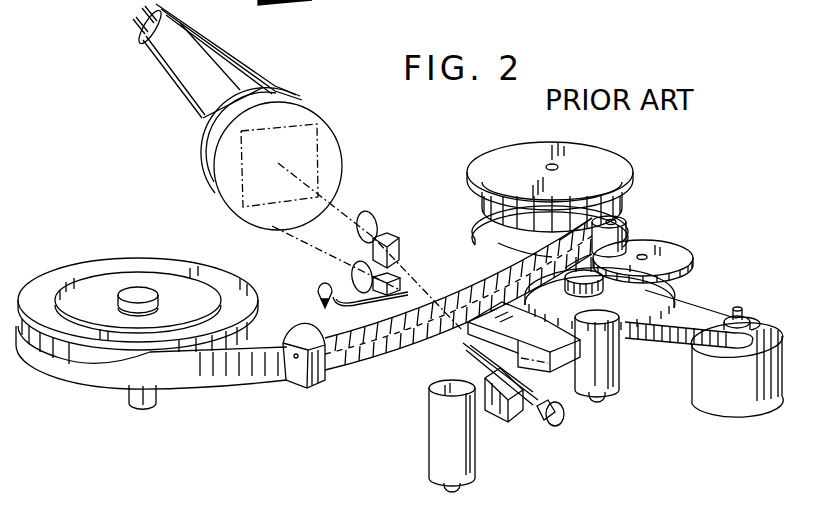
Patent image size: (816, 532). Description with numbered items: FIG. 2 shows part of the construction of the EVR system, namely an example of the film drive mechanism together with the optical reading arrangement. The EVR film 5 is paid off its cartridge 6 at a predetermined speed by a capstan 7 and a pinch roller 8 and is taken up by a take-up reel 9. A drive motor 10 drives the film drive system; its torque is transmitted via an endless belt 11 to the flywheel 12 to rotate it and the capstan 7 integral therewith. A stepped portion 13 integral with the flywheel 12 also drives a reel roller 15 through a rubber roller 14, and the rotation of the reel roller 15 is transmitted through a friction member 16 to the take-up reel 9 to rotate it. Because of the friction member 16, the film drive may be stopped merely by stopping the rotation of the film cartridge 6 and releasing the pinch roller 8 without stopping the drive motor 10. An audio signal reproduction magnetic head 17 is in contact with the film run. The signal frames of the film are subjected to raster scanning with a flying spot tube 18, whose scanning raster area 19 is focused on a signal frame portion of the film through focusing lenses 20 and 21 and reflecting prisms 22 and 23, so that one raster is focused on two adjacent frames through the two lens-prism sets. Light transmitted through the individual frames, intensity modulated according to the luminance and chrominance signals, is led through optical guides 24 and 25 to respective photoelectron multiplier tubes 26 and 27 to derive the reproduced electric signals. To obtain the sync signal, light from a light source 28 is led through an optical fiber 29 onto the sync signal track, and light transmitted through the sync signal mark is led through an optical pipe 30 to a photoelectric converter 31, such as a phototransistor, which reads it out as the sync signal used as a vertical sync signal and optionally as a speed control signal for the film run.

The EVR film 5 is at (355, 365).
The cartridge 6 is at (136, 262).
The capstan 7 is at (583, 222).
The pinch roller 8 is at (628, 222).
The take-up reel 9 is at (604, 157).
The drive motor 10 is at (732, 410).
The endless belt 11 is at (668, 340).
The flywheel 12 is at (637, 293).
The stepped portion 13 is at (574, 288).
The rubber roller 14 is at (672, 255).
The reel roller 15 is at (495, 252).
The friction member 16 is at (470, 240).
The audio signal reproduction magnetic head 17 is at (315, 386).
The flying spot tube 18 is at (230, 60).
The scanning raster area 19 is at (320, 138).
The focusing lens 20 is at (370, 212).
The focusing lens 21 is at (365, 265).
The reflecting prism 22 is at (400, 247).
The reflecting prism 23 is at (400, 282).
The optical guide 24 is at (542, 372).
The optical guide 25 is at (515, 415).
The photoelectron multiplier tube 26 is at (620, 378).
The photoelectron multiplier tube 27 is at (430, 435).
The light source 28 is at (320, 284).
The optical fiber 29 is at (358, 306).
The optical pipe 30 is at (480, 360).
The photoelectric converter 31 is at (553, 426).